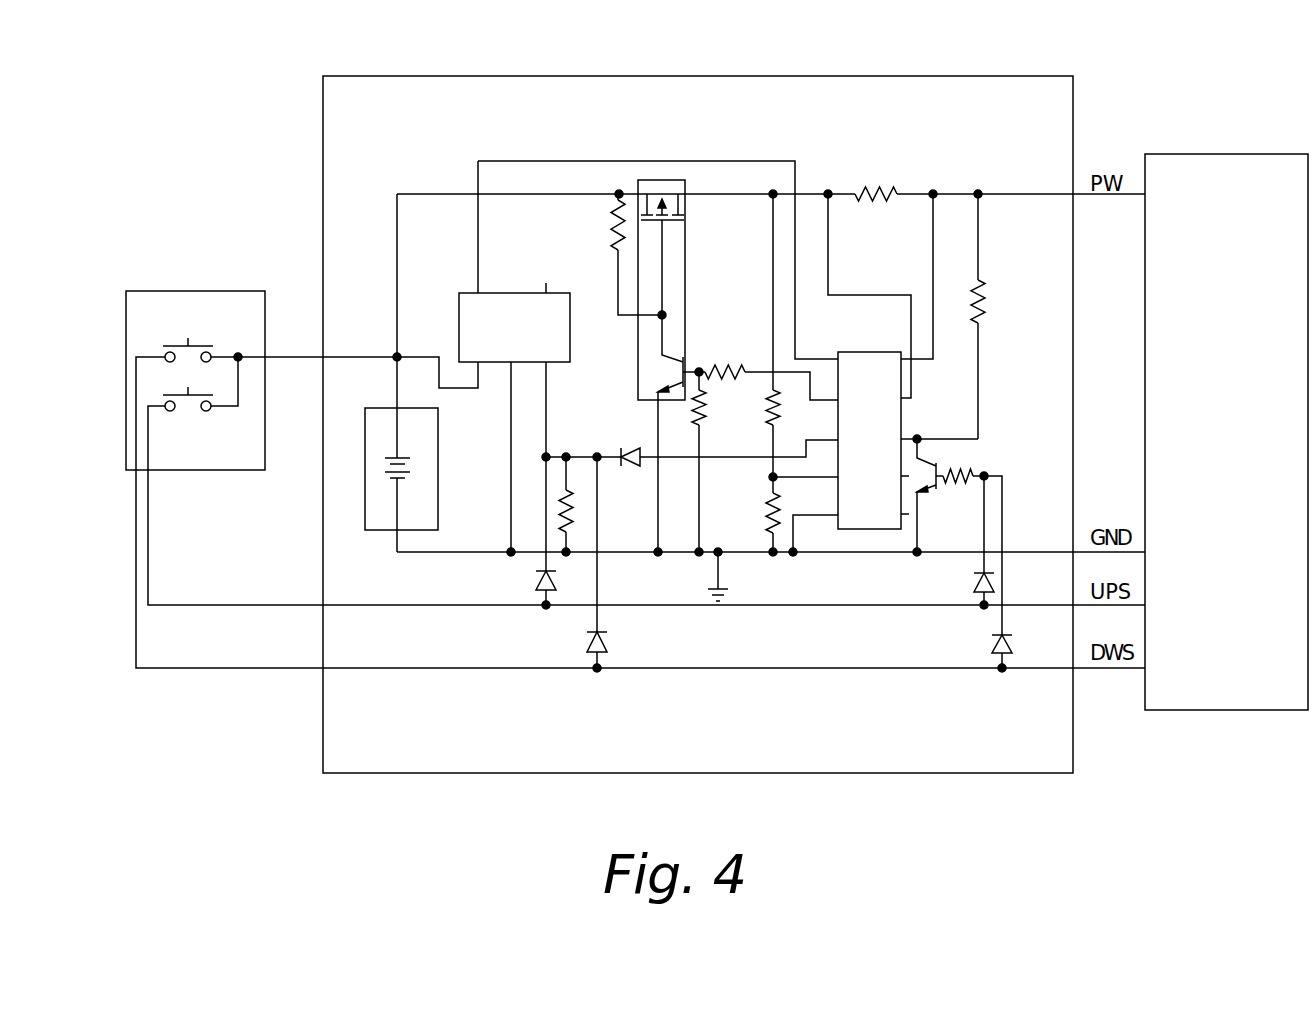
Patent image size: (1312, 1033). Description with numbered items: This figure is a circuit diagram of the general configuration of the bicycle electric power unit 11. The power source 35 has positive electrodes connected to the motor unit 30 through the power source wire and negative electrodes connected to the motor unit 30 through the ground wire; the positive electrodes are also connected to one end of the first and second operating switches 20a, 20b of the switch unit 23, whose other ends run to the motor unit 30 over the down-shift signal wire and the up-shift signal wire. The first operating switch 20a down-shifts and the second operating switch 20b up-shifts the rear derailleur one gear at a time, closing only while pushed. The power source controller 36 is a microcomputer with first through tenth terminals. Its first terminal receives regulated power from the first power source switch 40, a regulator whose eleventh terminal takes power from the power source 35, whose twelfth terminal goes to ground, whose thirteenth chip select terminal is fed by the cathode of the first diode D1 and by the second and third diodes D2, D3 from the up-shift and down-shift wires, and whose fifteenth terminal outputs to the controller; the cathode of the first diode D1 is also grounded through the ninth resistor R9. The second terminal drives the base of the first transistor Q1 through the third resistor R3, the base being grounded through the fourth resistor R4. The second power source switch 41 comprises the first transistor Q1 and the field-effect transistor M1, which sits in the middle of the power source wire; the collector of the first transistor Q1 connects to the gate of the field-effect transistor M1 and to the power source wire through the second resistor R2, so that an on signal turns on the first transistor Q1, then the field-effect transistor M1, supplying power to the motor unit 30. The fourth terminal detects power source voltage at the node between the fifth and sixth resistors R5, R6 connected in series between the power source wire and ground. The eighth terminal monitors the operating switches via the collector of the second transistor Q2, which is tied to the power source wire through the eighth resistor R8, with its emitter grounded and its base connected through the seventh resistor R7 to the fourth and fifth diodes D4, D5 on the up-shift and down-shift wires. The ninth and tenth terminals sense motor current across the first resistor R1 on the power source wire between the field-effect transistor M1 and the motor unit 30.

The electric power unit 11 is at (667, 76).
The switch unit 23 is at (148, 291).
The first operating switch 20a is at (197, 342).
The second operating switch 20b is at (207, 412).
The motor unit 30 is at (1222, 154).
The power source 35 is at (438, 458).
The power source controller 36 is at (863, 352).
The first power source switch 40 is at (493, 293).
The second power source switch 41 is at (642, 182).
The field-effect transistor M1 is at (665, 205).
The first transistor Q1 is at (683, 357).
The second transistor Q2 is at (930, 463).
The first resistor R1 is at (890, 194).
The second resistor R2 is at (620, 212).
The third resistor R3 is at (740, 370).
The fourth resistor R4 is at (704, 405).
The fifth resistor R5 is at (779, 405).
The sixth resistor R6 is at (765, 500).
The seventh resistor R7 is at (968, 468).
The eighth resistor R8 is at (985, 300).
The ninth resistor R9 is at (572, 508).
The first diode D1 is at (635, 452).
The second diode D2 is at (539, 583).
The third diode D3 is at (590, 645).
The fourth diode D4 is at (975, 588).
The fifth diode D5 is at (994, 645).